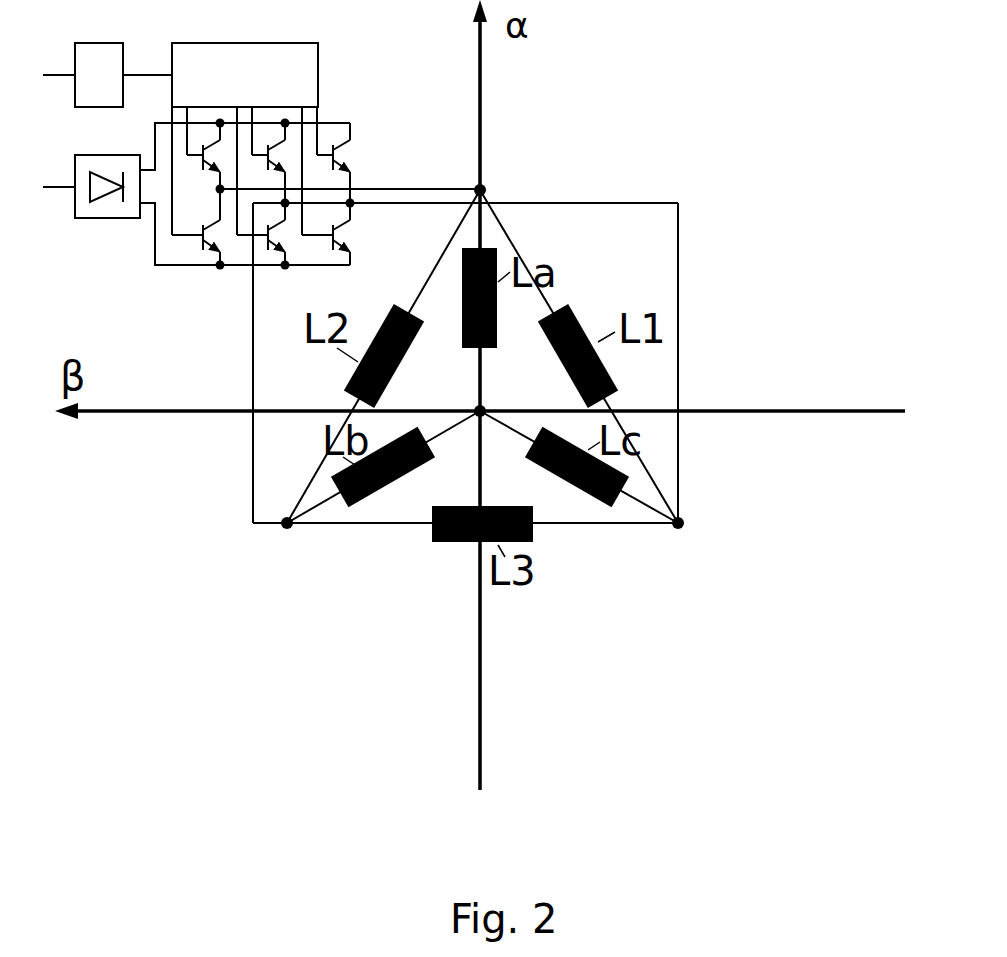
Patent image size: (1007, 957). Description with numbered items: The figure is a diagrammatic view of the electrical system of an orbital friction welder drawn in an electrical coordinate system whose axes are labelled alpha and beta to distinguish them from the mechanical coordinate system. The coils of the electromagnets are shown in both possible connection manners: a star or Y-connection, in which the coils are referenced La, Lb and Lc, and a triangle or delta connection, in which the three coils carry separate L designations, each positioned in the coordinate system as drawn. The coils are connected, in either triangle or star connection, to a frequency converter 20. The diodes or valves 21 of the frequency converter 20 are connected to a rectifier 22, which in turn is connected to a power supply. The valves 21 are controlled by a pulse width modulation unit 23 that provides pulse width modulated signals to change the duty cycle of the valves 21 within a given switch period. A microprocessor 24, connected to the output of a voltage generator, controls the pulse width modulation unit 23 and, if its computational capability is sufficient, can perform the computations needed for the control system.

The frequency converter 20 is at (300, 181).
The valve 21 is at (337, 163).
The rectifier 22 is at (108, 218).
The pulse width modulation unit 23 is at (287, 43).
The microprocessor 24 is at (102, 41).